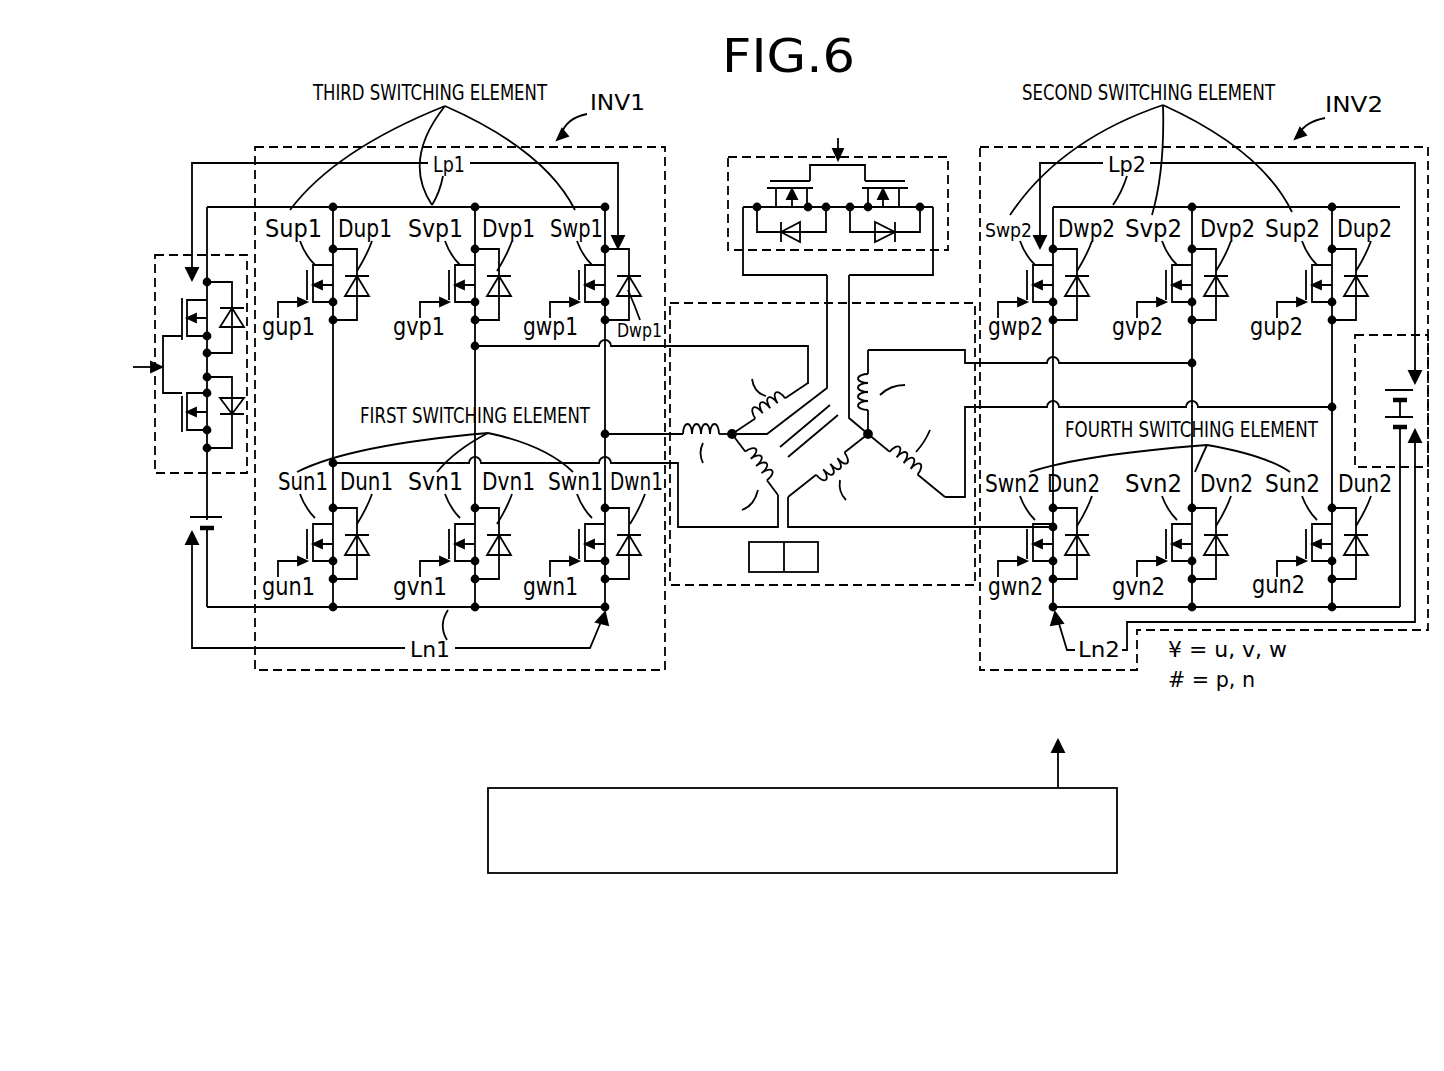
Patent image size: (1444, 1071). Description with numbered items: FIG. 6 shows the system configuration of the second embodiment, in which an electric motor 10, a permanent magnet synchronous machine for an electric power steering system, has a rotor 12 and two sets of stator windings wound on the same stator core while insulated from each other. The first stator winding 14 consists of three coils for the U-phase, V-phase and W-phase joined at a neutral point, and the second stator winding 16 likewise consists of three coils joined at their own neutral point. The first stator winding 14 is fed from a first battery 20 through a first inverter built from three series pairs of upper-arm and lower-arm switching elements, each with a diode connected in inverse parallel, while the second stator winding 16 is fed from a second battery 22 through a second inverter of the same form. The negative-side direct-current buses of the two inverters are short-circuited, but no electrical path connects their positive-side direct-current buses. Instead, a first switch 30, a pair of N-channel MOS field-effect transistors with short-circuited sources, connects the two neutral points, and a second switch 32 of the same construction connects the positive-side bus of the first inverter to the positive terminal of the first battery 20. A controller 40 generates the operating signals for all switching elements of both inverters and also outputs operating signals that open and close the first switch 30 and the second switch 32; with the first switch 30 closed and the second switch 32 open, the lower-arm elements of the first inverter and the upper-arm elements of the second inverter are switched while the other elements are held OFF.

The electric motor 10 is at (688, 296).
The rotor 12 is at (818, 568).
The first stator winding 14 is at (748, 336).
The second stator winding 16 is at (890, 336).
The first battery 20 is at (199, 515).
The second battery 22 is at (1394, 388).
The first switch 30 is at (921, 152).
The second switch 32 is at (176, 252).
The controller 40 is at (1117, 832).